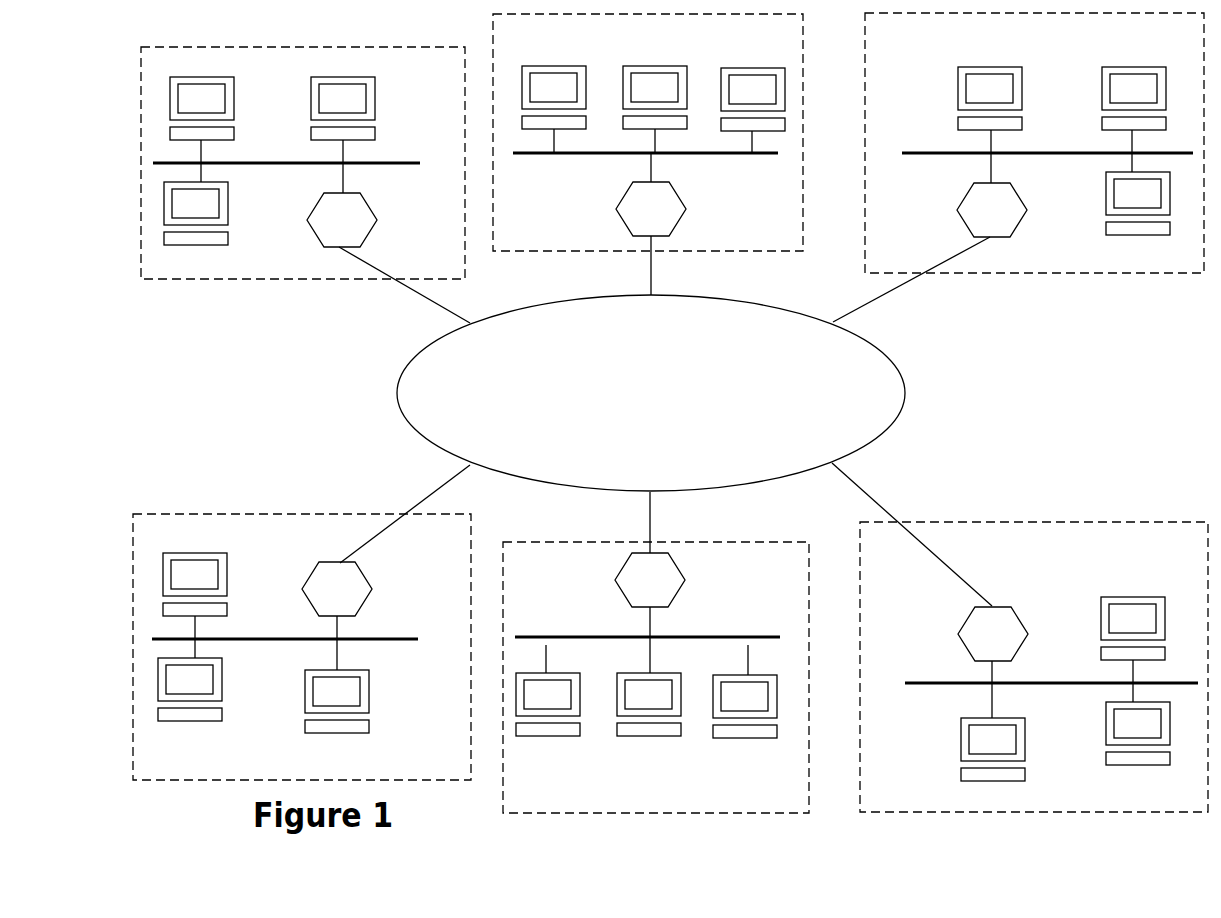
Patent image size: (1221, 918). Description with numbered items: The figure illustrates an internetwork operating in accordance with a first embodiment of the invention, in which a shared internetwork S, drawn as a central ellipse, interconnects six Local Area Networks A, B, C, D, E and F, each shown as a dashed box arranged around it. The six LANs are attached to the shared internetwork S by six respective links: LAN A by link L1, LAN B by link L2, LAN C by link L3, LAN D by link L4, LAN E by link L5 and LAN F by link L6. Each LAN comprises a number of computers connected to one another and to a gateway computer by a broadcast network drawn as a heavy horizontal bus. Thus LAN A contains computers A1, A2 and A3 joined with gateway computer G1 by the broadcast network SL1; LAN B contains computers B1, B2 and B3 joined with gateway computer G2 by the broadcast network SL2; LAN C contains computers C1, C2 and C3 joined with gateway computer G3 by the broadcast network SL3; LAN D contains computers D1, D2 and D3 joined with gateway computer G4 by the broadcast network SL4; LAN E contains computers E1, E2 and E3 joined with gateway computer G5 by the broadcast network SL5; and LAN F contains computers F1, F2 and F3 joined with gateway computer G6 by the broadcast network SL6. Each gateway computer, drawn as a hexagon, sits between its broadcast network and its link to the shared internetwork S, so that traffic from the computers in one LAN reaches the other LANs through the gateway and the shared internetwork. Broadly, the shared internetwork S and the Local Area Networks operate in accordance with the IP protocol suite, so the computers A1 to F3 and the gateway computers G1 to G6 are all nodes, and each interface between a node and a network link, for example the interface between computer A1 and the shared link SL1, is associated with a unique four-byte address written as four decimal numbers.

The shared internetwork S is at (900, 370).
The Local Area Network A is at (277, 279).
The computer A1 is at (233, 98).
The computer A2 is at (374, 98).
The computer A3 is at (228, 203).
The broadcast network SL1 is at (393, 162).
The gateway computer G1 is at (375, 206).
The link L1 is at (425, 297).
The Local Area Network B is at (603, 251).
The computer B1 is at (555, 66).
The computer B2 is at (660, 66).
The computer B3 is at (760, 68).
The broadcast network SL2 is at (542, 153).
The gateway computer G2 is at (686, 197).
The link L2 is at (653, 280).
The Local Area Network C is at (1057, 273).
The computer C1 is at (958, 90).
The computer C2 is at (1102, 90).
The computer C3 is at (1106, 201).
The broadcast network SL3 is at (935, 153).
The gateway computer G3 is at (960, 200).
The link L3 is at (882, 302).
The Local Area Network D is at (990, 522).
The computer D1 is at (1101, 618).
The computer D2 is at (961, 738).
The computer D3 is at (1106, 722).
The broadcast network SL4 is at (950, 683).
The gateway computer G4 is at (965, 618).
The link L4 is at (870, 495).
The Local Area Network E is at (750, 542).
The computer E1 is at (555, 737).
The computer E2 is at (655, 737).
The computer E3 is at (748, 738).
The broadcast network SL5 is at (705, 635).
The gateway computer G5 is at (625, 568).
The link L5 is at (650, 527).
The Local Area Network F is at (282, 514).
The computer F1 is at (227, 573).
The computer F2 is at (222, 688).
The computer F3 is at (370, 692).
The broadcast network SL6 is at (372, 637).
The gateway computer G6 is at (369, 578).
The link L6 is at (442, 488).